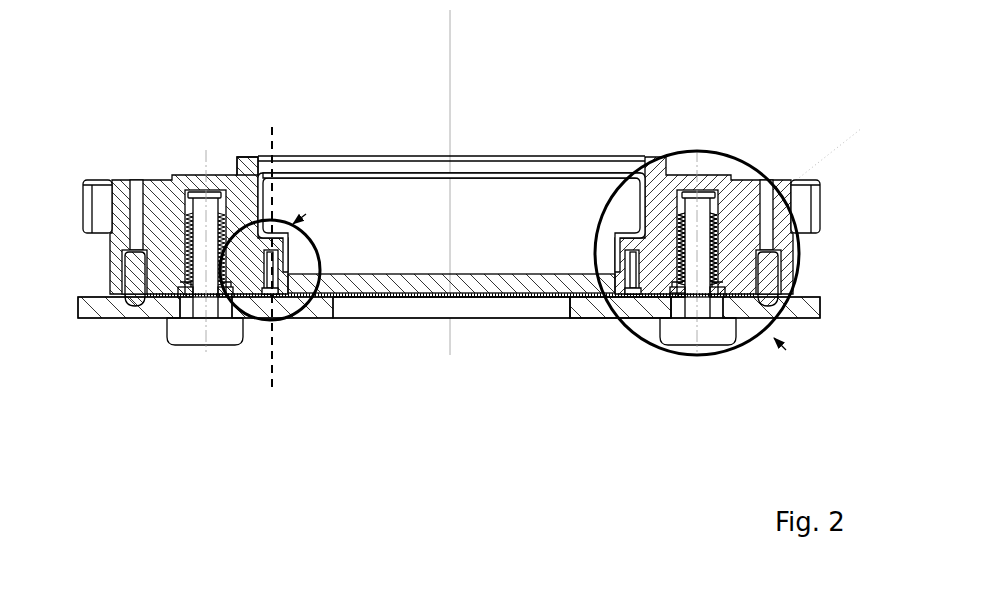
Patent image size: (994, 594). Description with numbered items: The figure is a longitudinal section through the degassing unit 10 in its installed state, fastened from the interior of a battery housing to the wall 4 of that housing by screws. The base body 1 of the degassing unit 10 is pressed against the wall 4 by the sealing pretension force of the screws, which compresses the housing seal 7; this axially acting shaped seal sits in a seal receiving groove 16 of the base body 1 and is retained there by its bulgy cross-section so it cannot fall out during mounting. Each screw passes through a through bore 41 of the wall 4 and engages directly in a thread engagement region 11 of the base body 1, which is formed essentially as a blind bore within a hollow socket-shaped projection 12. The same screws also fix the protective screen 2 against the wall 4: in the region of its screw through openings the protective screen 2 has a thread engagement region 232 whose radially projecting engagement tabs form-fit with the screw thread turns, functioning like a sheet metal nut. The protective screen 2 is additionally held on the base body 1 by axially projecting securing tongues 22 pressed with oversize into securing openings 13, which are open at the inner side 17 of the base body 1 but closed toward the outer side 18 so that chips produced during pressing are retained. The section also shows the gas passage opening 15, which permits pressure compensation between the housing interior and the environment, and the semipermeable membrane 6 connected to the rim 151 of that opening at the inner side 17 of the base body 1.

The degassing unit 10 is at (213, 95).
The base body 1 is at (106, 273).
The protective screen 2 is at (355, 302).
The wall of the electronics housing 4 is at (104, 320).
The semipermeable membrane 6 is at (288, 298).
The housing seal 7 is at (137, 305).
The thread engagement region 11 is at (716, 208).
The hollow socket-shaped projection 12 is at (722, 182).
The securing opening 13 is at (278, 257).
The gas passage opening 15 is at (429, 271).
The seal receiving groove 16 is at (136, 250).
The inner side of the base body 17 is at (526, 294).
The outer side of the base body 18 is at (228, 168).
The securing tongue 22 is at (628, 248).
The through bore of the wall 41 is at (410, 304).
The rim of the gas passage opening 151 is at (597, 316).
The thread engagement region of the protective screen 232 is at (686, 300).